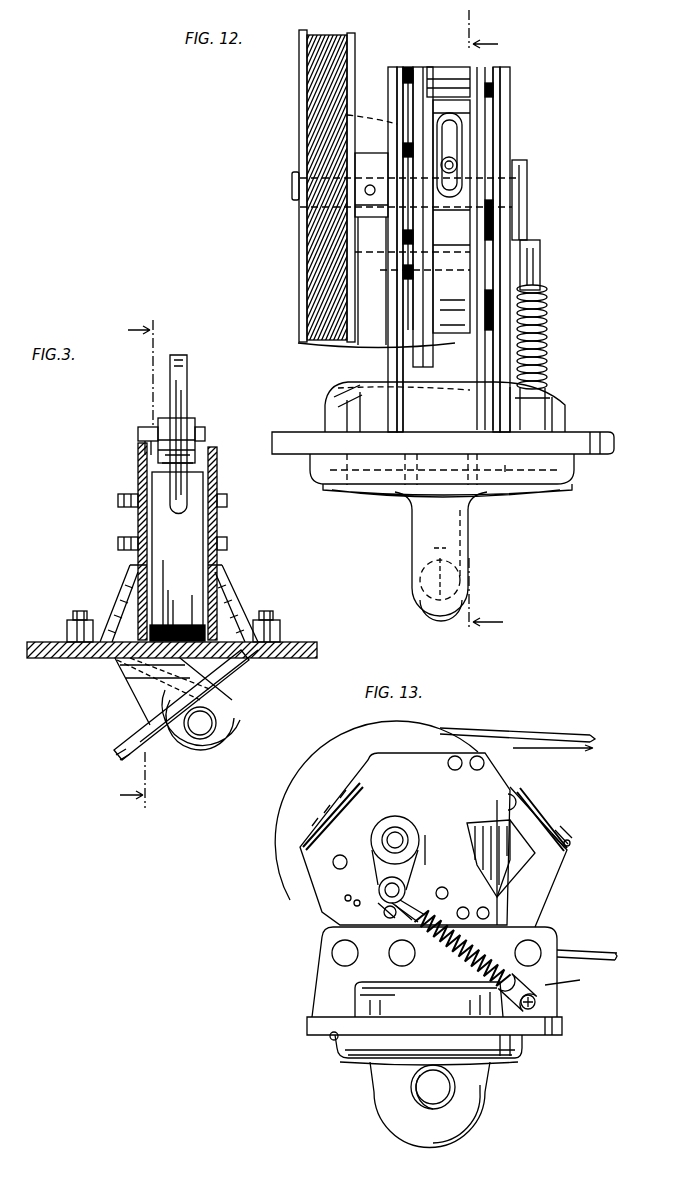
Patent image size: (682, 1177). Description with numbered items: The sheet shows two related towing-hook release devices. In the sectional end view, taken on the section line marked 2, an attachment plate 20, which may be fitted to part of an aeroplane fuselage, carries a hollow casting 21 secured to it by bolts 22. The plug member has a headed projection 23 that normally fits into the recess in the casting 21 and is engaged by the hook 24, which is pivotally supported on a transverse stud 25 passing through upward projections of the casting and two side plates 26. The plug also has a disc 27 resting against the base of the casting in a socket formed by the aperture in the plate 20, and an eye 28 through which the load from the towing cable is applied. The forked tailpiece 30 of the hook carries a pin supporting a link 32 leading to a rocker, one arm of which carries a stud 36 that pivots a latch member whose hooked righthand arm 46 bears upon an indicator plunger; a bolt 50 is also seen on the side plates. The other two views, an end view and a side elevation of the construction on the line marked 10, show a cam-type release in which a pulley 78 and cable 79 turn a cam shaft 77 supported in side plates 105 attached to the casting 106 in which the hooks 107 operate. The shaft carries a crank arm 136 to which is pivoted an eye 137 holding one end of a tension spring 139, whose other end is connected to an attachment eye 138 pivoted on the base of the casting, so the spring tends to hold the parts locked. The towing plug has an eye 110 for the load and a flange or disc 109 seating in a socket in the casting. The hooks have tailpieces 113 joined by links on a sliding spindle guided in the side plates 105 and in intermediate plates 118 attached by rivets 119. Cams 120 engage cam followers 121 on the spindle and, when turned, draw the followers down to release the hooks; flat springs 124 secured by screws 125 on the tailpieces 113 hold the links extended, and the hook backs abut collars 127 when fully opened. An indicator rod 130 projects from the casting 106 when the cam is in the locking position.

In FIG. 3, the section line 2- 2 is at (126, 564).
In FIG. 12, the section line 10- 10 is at (486, 320).
In FIG. 3, the attachment plate 20 is at (60, 659).
In FIG. 3, the hollow casting 21 is at (217, 490).
In FIG. 3, the bolts 22 is at (82, 612).
In FIG. 3, the headed projection 23 is at (135, 672).
In FIG. 3, the hook 24 is at (185, 640).
In FIG. 3, the transverse stud 25 is at (227, 540).
In FIG. 3, the side plates 26 is at (138, 460).
In FIG. 3, the disc 27 is at (130, 740).
In FIG. 3, the eye 28 is at (240, 705).
In FIG. 3, the tailpiece 30 is at (203, 474).
In FIG. 3, the link 32 is at (190, 448).
In FIG. 3, the stud 36 is at (196, 420).
In FIG. 3, the righthand arm 46 is at (187, 377).
In FIG. 3, the set bolt 50 is at (227, 502).
In FIG. 12, the cam shaft 77 is at (292, 186).
In FIG. 13, the cam shaft 77 is at (395, 840).
In FIG. 12, the pulley 78 is at (299, 133).
In FIG. 13, the pulley 78 is at (296, 773).
In FIG. 13, the cable 79 is at (590, 738).
In FIG. 12, the side plates 105 is at (390, 82).
In FIG. 13, the side plates 105 is at (475, 782).
In FIG. 12, the casting 106 is at (348, 384).
In FIG. 13, the casting 106 is at (554, 983).
In FIG. 12, the hooks 107 is at (360, 406).
In FIG. 12, the flange or disc 109 is at (352, 490).
In FIG. 13, the flange or disc 109 is at (348, 1060).
In FIG. 12, the eye 110 is at (420, 585).
In FIG. 13, the eye 110 is at (388, 1104).
In FIG. 12, the tailpieces 113 is at (450, 226).
In FIG. 13, the tailpieces 113 is at (560, 862).
In FIG. 12, the intermediate plates 118 is at (420, 66).
In FIG. 12, the rivets 119 is at (445, 78).
In FIG. 12, the cams 120 is at (408, 72).
In FIG. 12, the cam followers 121 is at (400, 120).
In FIG. 12, the flat springs 124 is at (462, 145).
In FIG. 13, the flat springs 124 is at (337, 813).
In FIG. 13, the screws 125 is at (568, 836).
In FIG. 12, the collars 127 is at (298, 343).
In FIG. 13, the indicator rod 130 is at (330, 1037).
In FIG. 12, the crank arm 136 is at (527, 210).
In FIG. 13, the crank arm 136 is at (392, 890).
In FIG. 12, the eye 137 is at (540, 278).
In FIG. 13, the eye 137 is at (392, 908).
In FIG. 12, the attachment eye 138 is at (547, 386).
In FIG. 13, the attachment eye 138 is at (535, 990).
In FIG. 12, the tension spring 139 is at (547, 322).
In FIG. 13, the tension spring 139 is at (500, 965).